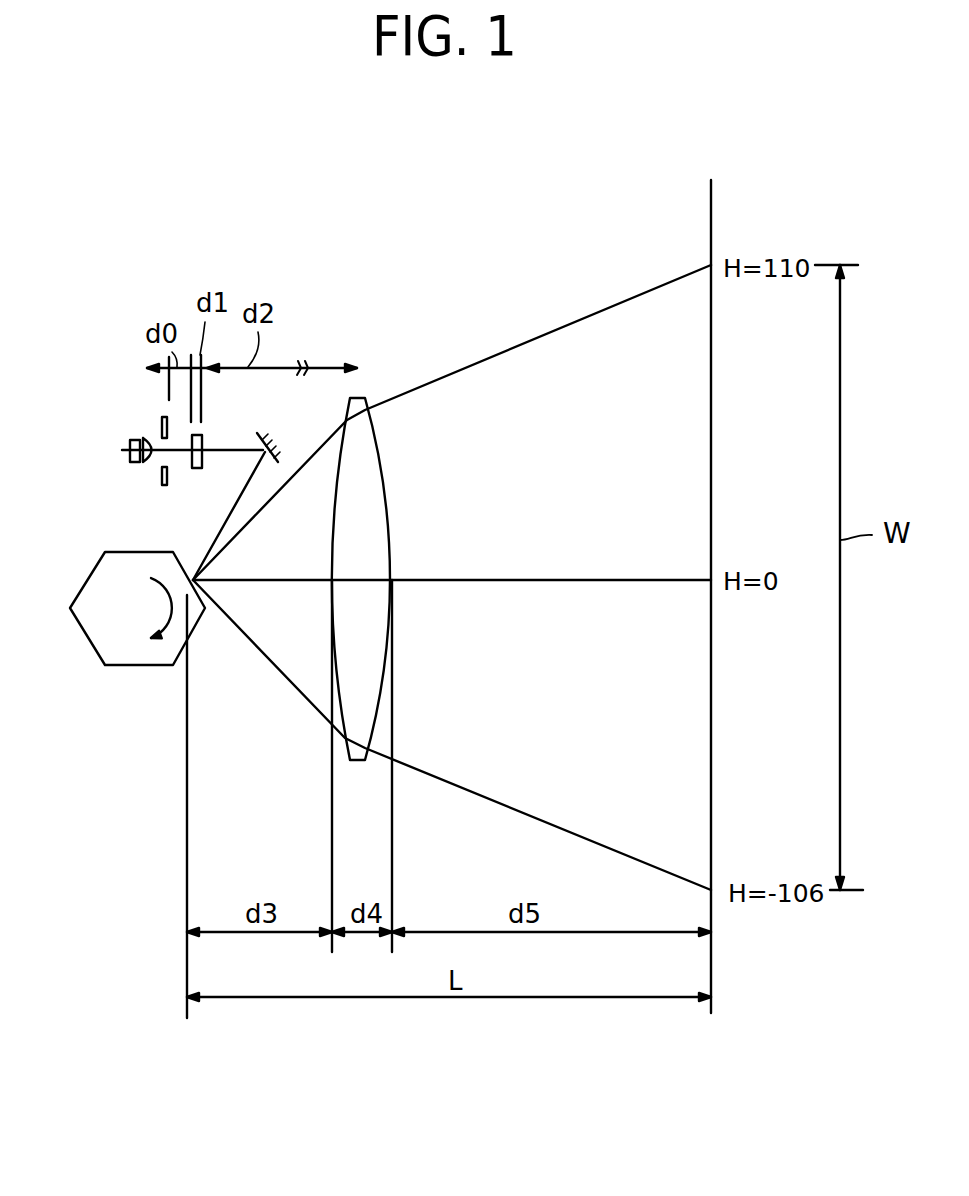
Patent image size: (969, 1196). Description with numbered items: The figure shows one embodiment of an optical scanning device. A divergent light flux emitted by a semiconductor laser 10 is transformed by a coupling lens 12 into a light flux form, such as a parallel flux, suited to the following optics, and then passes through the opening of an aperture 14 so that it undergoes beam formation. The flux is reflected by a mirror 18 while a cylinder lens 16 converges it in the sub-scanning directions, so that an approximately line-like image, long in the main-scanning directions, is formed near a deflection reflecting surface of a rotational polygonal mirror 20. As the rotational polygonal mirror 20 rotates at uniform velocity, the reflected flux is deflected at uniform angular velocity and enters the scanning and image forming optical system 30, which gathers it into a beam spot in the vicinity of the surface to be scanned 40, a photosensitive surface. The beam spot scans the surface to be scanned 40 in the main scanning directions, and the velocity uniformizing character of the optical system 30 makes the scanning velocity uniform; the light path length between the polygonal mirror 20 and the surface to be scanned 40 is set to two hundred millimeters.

The semiconductor laser 10 is at (130, 444).
The coupling lens 12 is at (150, 462).
The aperture 14 is at (162, 423).
The cylinder lens 16 is at (203, 440).
The mirror 18 is at (263, 433).
The rotational polygonal mirror 20 is at (87, 578).
The scanning and image forming optical system 30 is at (388, 487).
The surface to be scanned 40 is at (712, 440).